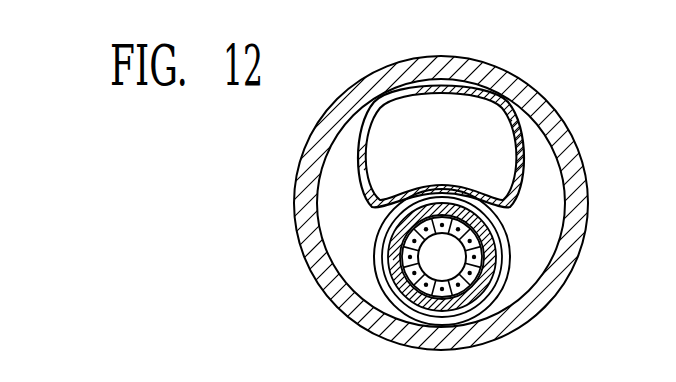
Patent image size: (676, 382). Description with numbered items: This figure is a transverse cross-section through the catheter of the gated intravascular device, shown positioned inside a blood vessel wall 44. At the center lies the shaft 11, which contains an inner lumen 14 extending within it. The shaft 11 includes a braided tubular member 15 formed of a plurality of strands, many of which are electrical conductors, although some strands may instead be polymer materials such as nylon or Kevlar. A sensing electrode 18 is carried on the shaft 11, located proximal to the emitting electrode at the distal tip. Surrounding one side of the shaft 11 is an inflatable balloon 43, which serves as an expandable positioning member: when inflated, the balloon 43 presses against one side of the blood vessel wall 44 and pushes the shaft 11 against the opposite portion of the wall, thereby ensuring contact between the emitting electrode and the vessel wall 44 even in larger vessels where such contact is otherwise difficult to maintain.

The shaft 11 is at (477, 281).
The inner lumen 14 is at (430, 238).
The braided tubular member 15 is at (415, 287).
The sensing electrode 18 is at (493, 240).
The inflatable balloon 43 is at (523, 167).
The blood vessel wall 44 is at (567, 264).